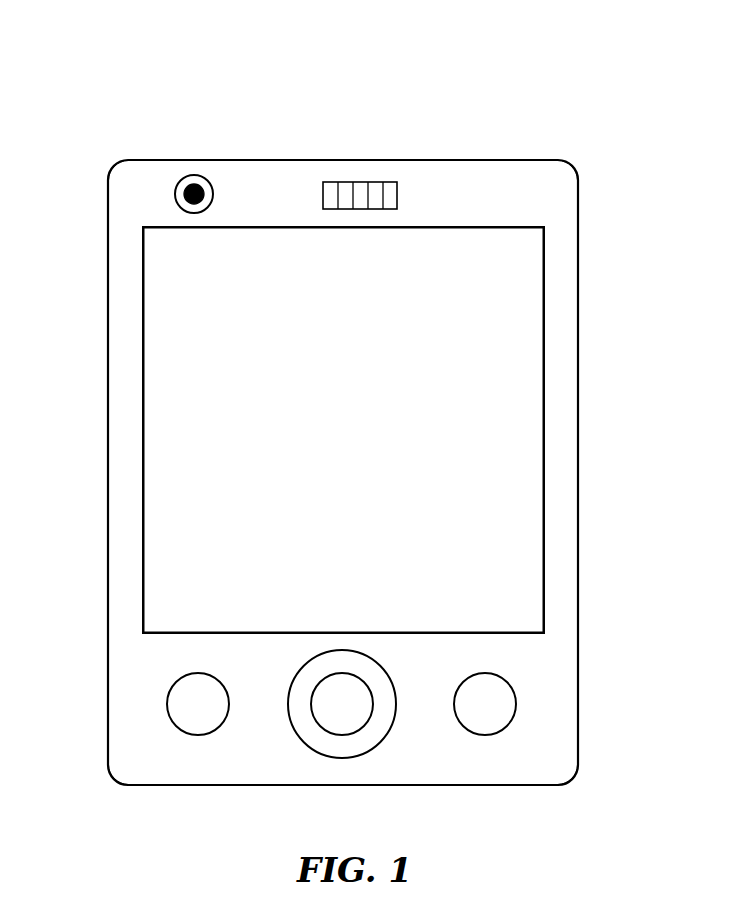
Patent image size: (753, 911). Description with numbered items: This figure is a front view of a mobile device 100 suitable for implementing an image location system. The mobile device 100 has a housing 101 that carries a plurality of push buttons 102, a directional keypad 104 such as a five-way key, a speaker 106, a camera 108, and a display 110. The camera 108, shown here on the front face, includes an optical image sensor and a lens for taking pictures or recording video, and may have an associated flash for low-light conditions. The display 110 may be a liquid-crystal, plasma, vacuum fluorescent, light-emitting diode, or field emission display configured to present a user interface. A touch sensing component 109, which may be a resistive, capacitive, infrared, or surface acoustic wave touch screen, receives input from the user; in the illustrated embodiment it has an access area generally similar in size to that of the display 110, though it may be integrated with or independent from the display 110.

The mobile device 100 is at (579, 110).
The housing 101 is at (560, 648).
The push buttons 102 is at (167, 703).
The directional keypad 104 is at (370, 752).
The speaker 106 is at (359, 182).
The camera 108 is at (194, 175).
The touch sensing component 109 is at (544, 431).
The display 110 is at (518, 350).